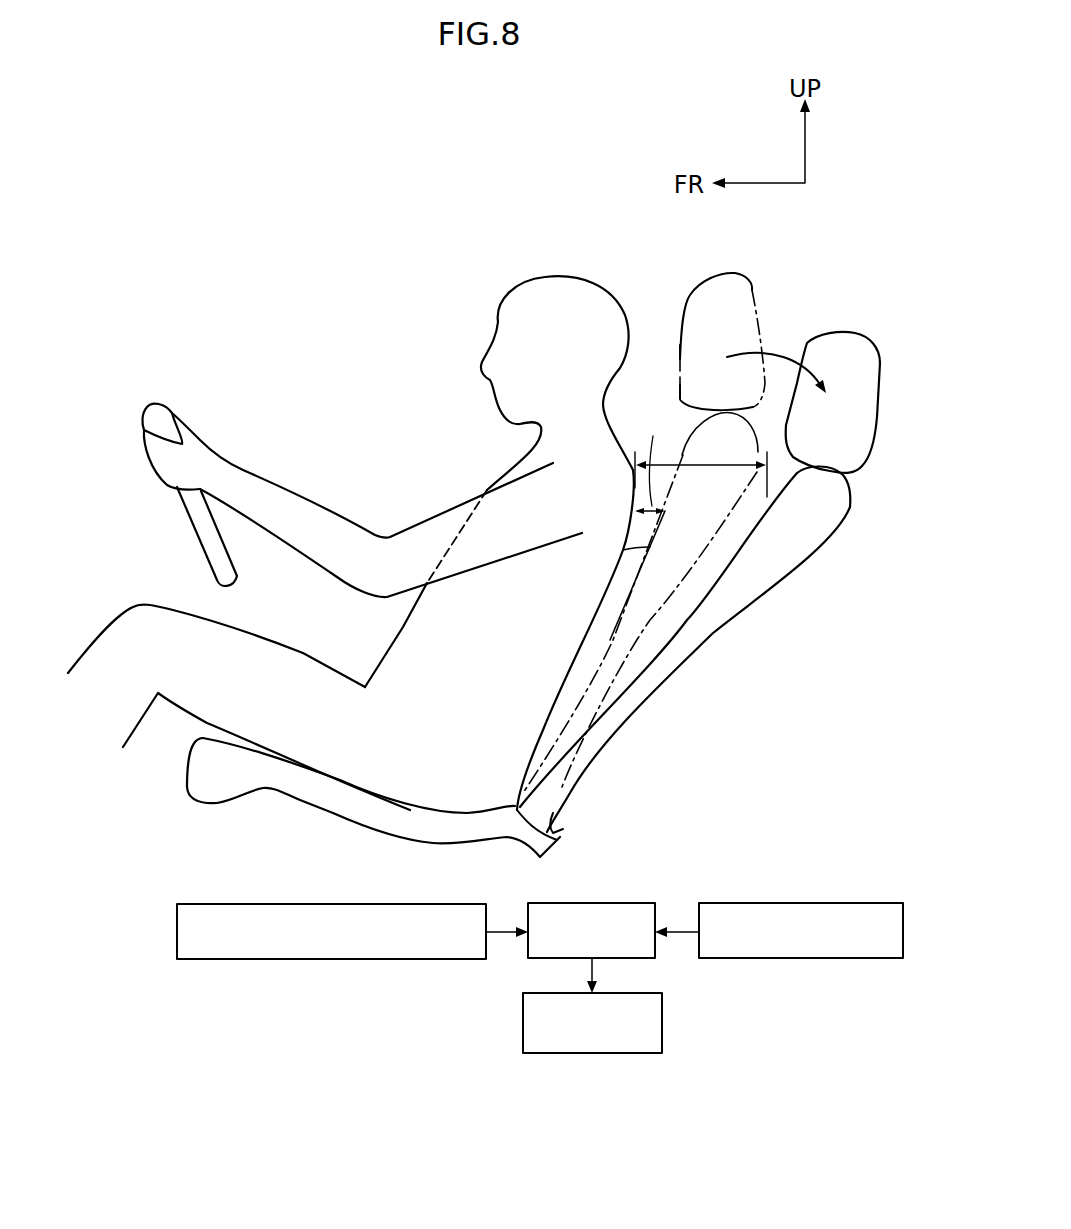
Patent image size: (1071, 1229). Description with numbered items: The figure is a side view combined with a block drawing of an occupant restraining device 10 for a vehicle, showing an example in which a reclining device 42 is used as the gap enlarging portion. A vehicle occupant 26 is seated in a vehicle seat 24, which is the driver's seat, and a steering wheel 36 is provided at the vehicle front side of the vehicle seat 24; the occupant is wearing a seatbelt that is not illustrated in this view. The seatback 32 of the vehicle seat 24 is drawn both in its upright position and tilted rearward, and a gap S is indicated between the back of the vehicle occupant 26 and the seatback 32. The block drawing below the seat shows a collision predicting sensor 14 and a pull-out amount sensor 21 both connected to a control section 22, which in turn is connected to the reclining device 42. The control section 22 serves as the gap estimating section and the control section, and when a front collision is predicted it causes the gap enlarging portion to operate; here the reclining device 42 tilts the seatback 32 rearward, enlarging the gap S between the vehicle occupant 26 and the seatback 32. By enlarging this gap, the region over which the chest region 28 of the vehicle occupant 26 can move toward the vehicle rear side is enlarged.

The occupant restraining device 10 is at (383, 306).
The collision predicting sensor 14 is at (387, 904).
The pull-out amount sensor 21 is at (802, 903).
The control section 22 is at (602, 903).
The vehicle seat 24 is at (716, 648).
The vehicle occupant 26 is at (557, 275).
The chest region 28 is at (500, 480).
The seatback 32 is at (693, 613).
The steering wheel 36 is at (200, 551).
The reclining device 42 is at (613, 1053).